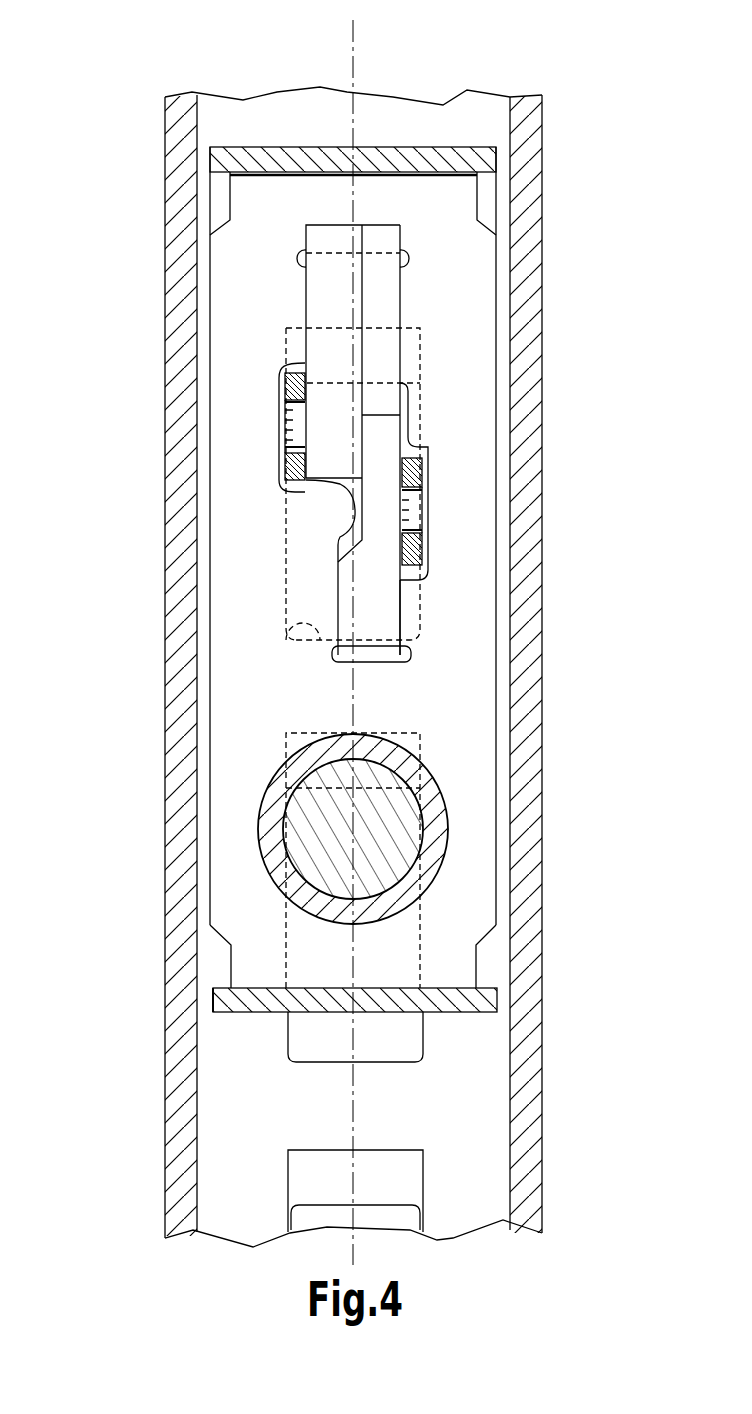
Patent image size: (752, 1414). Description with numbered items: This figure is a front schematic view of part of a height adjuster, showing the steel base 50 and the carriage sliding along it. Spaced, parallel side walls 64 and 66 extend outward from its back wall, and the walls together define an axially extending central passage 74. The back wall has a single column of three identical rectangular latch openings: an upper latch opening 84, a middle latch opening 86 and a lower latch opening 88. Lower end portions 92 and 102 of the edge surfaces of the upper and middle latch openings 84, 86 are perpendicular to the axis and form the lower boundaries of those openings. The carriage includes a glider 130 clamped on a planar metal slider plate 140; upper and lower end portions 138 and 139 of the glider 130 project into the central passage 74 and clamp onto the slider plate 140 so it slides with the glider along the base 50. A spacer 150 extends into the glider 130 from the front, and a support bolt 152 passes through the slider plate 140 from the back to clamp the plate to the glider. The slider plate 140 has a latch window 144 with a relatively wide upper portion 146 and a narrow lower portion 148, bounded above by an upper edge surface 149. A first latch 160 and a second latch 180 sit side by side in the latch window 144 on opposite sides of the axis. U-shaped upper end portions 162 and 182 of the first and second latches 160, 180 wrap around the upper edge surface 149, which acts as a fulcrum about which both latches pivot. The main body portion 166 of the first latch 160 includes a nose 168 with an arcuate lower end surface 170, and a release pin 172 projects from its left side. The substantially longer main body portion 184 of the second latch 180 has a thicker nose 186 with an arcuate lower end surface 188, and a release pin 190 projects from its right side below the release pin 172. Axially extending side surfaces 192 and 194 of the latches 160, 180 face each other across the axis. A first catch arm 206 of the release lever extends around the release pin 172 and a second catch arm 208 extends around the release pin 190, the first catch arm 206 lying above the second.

The base 50 is at (165, 1201).
The side wall 64 is at (183, 1170).
The side wall 66 is at (533, 1185).
The central passage 74 is at (252, 1123).
The upper latch opening 84 is at (423, 355).
The middle latch opening 86 is at (425, 1043).
The lower latch opening 88 is at (427, 1223).
The lower end portion 92 is at (286, 628).
The lower end portion 102 is at (317, 1050).
The glider 130 is at (500, 1000).
The upper end portion 138 is at (275, 153).
The lower end portion 139 is at (232, 1007).
The slider plate 140 is at (480, 960).
The latch window 144 is at (307, 288).
The upper portion 146 is at (279, 367).
The lower portion 148 is at (337, 553).
The upper edge surface 149 is at (392, 265).
The spacer 150 is at (440, 780).
The support bolt 152 is at (377, 828).
The first latch 160 is at (318, 224).
The upper end portion 162 is at (313, 240).
The main body portion 166 is at (325, 310).
The nose 168 is at (330, 450).
The arcuate lower end surface 170 is at (305, 486).
The release pin 172 is at (294, 427).
The second latch 180 is at (383, 224).
The upper end portion 182 is at (387, 242).
The main body portion 184 is at (383, 312).
The nose 186 is at (373, 588).
The arcuate lower end surface 188 is at (387, 657).
The release pin 190 is at (413, 507).
The side surface 192 is at (402, 416).
The side surface 194 is at (350, 396).
The first catch arm 206 is at (282, 463).
The second catch arm 208 is at (421, 468).